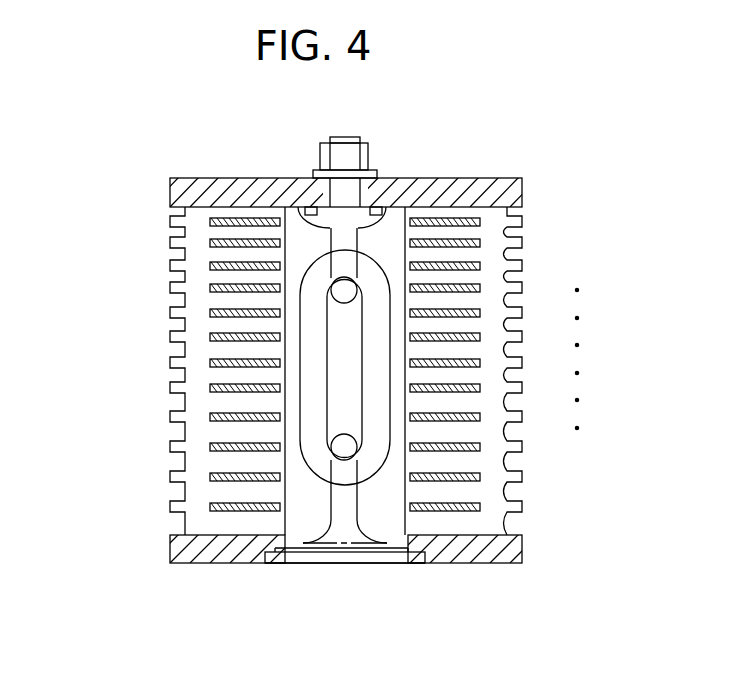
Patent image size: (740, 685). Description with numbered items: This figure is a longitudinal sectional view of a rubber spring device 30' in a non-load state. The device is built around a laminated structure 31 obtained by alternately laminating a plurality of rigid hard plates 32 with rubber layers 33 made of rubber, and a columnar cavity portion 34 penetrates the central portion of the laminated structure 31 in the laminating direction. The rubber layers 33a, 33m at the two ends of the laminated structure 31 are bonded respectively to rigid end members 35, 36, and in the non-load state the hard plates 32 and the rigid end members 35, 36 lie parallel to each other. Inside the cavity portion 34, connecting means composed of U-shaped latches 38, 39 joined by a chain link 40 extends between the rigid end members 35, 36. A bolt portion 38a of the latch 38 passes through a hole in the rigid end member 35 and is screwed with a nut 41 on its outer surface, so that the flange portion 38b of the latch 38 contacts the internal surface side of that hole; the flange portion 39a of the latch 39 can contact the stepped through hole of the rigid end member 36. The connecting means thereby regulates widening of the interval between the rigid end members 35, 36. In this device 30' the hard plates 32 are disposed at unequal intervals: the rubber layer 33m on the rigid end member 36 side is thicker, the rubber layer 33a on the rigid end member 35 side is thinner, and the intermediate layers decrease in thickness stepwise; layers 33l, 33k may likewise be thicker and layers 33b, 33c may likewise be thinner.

The rubber spring device 30' is at (348, 360).
The laminated structure 31 is at (112, 305).
The hard plates 32 is at (210, 288).
The rubber layers 33 is at (612, 200).
The rubber layer 33a is at (458, 217).
The rubber layer 33b is at (460, 239).
The rubber layer 33c is at (460, 262).
The rubber layer 33k is at (458, 463).
The rubber layer 33l is at (458, 495).
The rubber layer 33m is at (458, 527).
The cavity portion 34 is at (380, 517).
The rigid end member 35 is at (480, 190).
The rigid end member 36 is at (212, 550).
The U-shaped latch 38 is at (370, 236).
The bolt portion 38a is at (350, 153).
The flange portion 38b is at (334, 224).
The U-shaped latch 39 is at (278, 553).
The flange portion 39a is at (327, 564).
The chain link 40 is at (296, 511).
The nut 41 is at (322, 158).